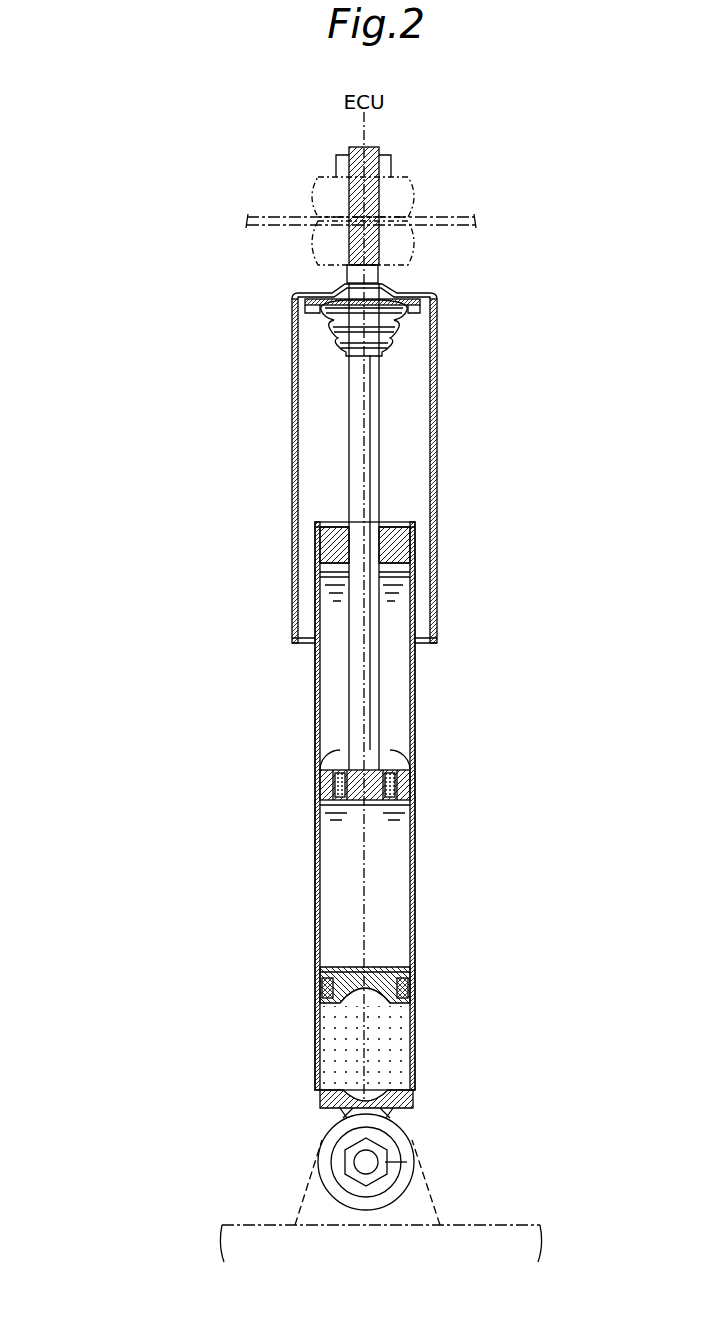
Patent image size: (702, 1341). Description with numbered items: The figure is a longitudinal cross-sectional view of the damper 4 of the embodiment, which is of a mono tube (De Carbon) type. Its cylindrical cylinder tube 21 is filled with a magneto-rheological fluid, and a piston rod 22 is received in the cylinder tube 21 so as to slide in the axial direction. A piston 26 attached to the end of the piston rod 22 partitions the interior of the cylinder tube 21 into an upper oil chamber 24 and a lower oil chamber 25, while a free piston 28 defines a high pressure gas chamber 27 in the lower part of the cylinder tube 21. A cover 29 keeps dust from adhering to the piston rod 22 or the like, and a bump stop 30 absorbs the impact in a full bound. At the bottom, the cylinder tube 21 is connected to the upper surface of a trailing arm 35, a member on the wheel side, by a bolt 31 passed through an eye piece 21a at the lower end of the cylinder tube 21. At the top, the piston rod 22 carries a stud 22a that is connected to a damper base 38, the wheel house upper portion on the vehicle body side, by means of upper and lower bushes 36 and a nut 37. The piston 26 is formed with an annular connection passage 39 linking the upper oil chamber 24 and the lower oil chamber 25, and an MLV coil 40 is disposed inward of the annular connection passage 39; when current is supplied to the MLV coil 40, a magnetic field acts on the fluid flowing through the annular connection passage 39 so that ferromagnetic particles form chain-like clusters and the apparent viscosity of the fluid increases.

The damper 4 is at (122, 389).
The stud 22a is at (350, 150).
The nut 37 is at (388, 162).
The upper and lower bushes 36 is at (410, 195).
The damper base 38 is at (273, 220).
The cover 29 is at (292, 465).
The bump stop 30 is at (335, 345).
The piston rod 22 is at (352, 686).
The cylinder tube 21 is at (315, 850).
The upper oil chamber 24 is at (397, 680).
The piston 26 is at (325, 755).
The annular connection passage 39 is at (400, 787).
The MLV coil 40 is at (408, 760).
The lower oil chamber 25 is at (397, 878).
The free piston 28 is at (319, 975).
The high pressure gas chamber 27 is at (393, 1043).
The eye piece 21a is at (325, 1150).
The bolt 31 is at (415, 1153).
The trailing arm 35 is at (467, 1232).